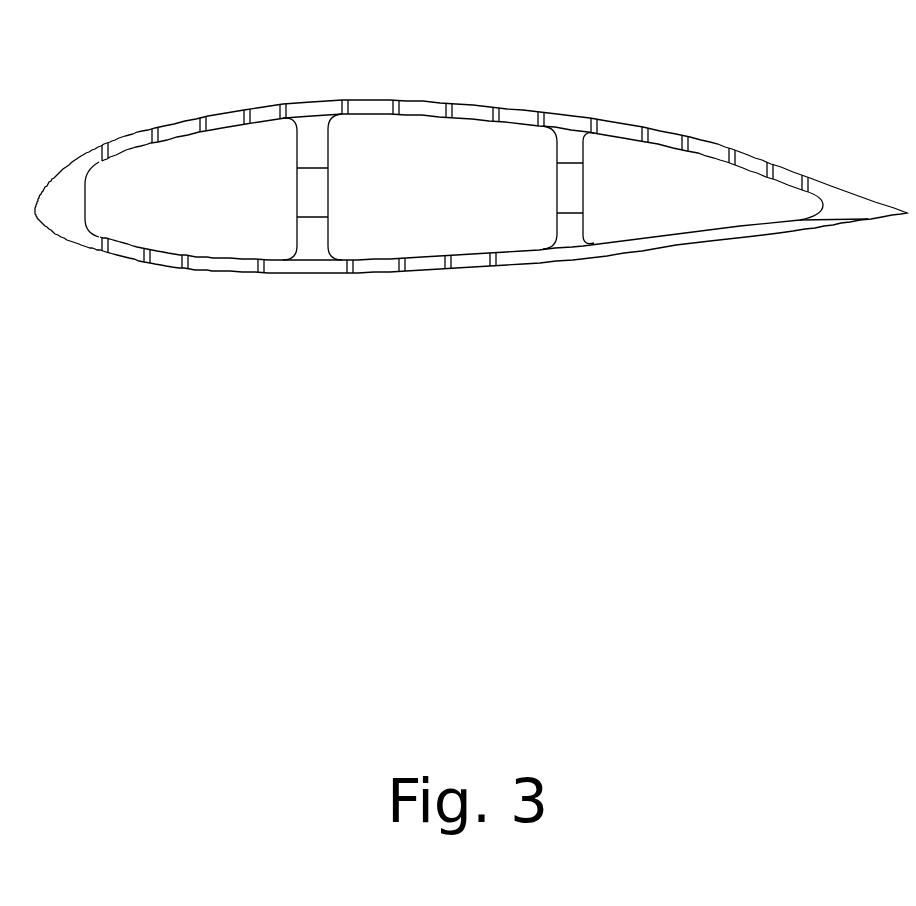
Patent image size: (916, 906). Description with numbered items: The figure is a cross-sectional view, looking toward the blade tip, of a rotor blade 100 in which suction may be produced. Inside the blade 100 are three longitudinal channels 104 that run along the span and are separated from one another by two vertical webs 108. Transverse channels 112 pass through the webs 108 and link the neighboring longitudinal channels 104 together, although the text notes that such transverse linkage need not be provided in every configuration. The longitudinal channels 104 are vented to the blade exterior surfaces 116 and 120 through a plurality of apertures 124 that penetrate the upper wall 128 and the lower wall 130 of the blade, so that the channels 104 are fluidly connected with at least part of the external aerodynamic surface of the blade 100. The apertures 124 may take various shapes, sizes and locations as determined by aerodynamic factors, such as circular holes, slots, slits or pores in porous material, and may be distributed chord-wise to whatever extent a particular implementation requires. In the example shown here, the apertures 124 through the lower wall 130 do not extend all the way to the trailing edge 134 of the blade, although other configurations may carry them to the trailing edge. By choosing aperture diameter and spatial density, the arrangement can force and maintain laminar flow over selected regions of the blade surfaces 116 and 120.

The rotor blade 100 is at (705, 405).
The longitudinal channels 104 is at (213, 212).
The vertical webs 108 is at (333, 148).
The transverse channels 112 is at (572, 192).
The blade exterior surface 116 is at (225, 112).
The blade exterior surface 120 is at (213, 271).
The apertures 124 is at (395, 100).
The upper wall 128 is at (567, 116).
The lower wall 130 is at (633, 251).
The trailing edge 134 is at (713, 240).